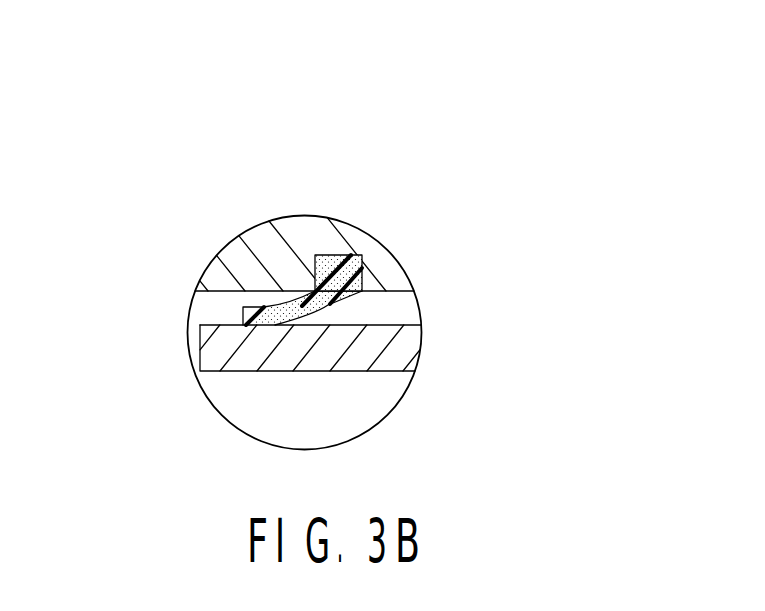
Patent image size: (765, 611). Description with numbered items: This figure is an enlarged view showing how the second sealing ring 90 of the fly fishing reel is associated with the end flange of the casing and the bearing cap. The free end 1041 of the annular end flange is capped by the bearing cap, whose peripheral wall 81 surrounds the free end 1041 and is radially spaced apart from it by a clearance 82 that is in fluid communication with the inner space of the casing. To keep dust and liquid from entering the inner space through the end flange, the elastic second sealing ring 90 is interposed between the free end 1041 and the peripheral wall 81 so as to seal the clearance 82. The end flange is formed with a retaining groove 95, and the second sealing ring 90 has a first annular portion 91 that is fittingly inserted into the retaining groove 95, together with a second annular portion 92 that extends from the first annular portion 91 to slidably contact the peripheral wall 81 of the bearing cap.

The peripheral wall 81 is at (360, 357).
The clearance 82 is at (397, 312).
The second sealing ring 90 is at (371, 273).
The first annular portion 91 is at (352, 255).
The second annular portion 92 is at (235, 310).
The retaining groove 95 is at (326, 253).
The free end 1041 is at (243, 268).